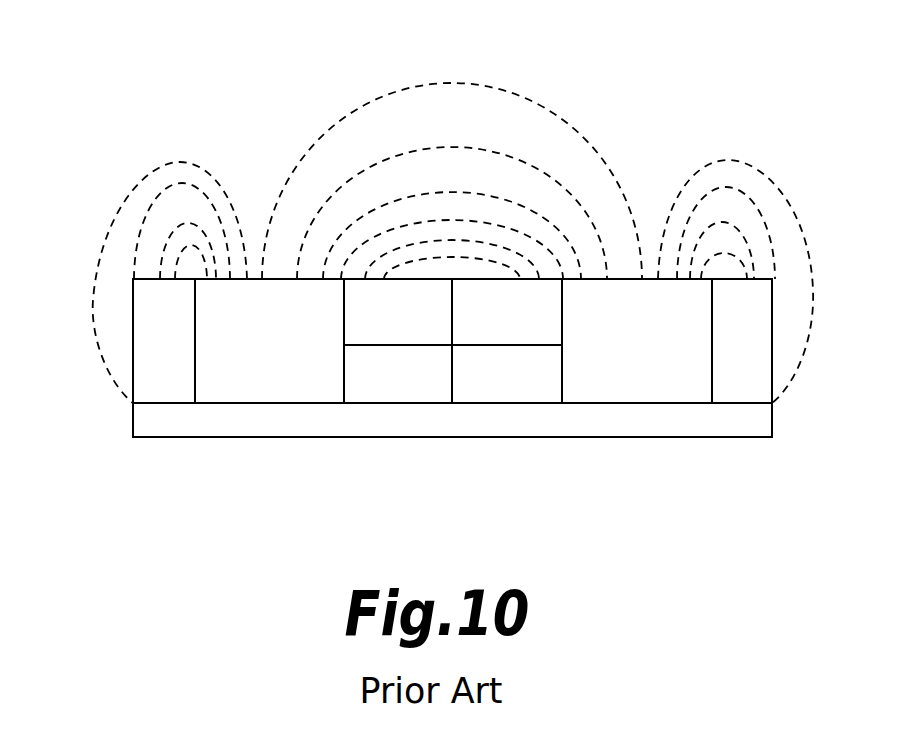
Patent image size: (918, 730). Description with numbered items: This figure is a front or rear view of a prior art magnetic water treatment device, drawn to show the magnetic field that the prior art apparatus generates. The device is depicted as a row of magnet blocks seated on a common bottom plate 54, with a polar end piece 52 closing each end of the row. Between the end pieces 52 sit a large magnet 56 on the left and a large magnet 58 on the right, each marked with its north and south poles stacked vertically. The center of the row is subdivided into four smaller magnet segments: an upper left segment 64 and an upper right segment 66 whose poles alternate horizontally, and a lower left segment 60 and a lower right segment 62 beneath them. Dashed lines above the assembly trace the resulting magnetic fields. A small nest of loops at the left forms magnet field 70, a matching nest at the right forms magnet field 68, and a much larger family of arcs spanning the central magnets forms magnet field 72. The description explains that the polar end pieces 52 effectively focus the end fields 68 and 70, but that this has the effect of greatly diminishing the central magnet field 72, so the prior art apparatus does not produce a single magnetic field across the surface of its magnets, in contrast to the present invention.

The polar end pieces 52 is at (173, 378).
The backing plate 54 is at (278, 428).
The left permanent magnet 56 is at (217, 380).
The right permanent magnet 58 is at (587, 380).
The lower left central magnet segment 60 is at (372, 383).
The lower right central magnet segment 62 is at (525, 383).
The upper left central magnet segment 64 is at (395, 332).
The upper right central magnet segment 66 is at (475, 333).
The magnet field 68 is at (700, 168).
The magnet field 70 is at (138, 190).
The magnet field 72 is at (337, 117).